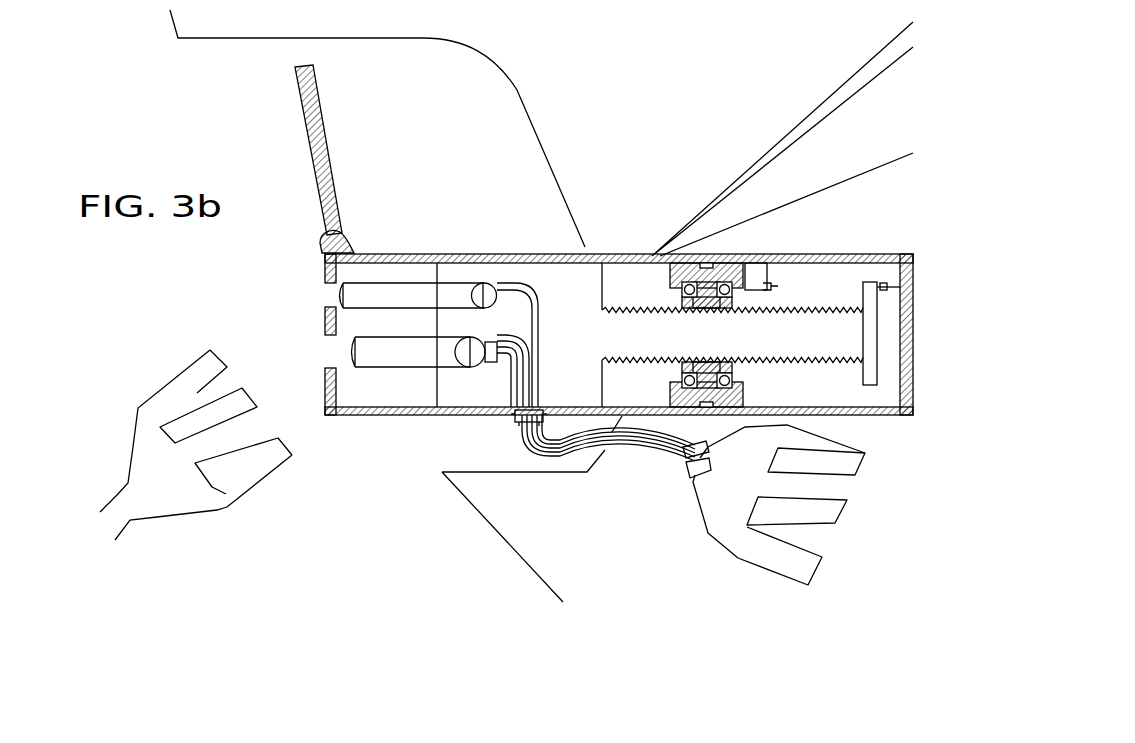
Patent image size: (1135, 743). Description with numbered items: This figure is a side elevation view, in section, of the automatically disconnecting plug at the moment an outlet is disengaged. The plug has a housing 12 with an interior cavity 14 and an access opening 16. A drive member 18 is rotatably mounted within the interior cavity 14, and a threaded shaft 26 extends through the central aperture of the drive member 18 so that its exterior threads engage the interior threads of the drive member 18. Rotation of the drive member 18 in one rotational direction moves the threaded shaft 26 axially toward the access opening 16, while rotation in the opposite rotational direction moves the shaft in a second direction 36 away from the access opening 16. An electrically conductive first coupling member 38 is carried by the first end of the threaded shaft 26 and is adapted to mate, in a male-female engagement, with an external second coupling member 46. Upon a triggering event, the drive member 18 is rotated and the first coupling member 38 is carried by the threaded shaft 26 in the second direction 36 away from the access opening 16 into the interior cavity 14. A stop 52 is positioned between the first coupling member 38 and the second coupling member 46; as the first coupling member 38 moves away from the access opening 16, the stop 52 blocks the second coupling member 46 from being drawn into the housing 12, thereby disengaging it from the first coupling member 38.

The housing 12 is at (812, 254).
The interior cavity 14 is at (648, 252).
The access opening 16 is at (332, 353).
The drive member 18 is at (710, 254).
The threaded shaft 26 is at (617, 254).
The second direction 36 is at (655, 383).
The first coupling member 38 is at (465, 392).
The second coupling member 46 is at (228, 493).
The stop 52 is at (323, 318).